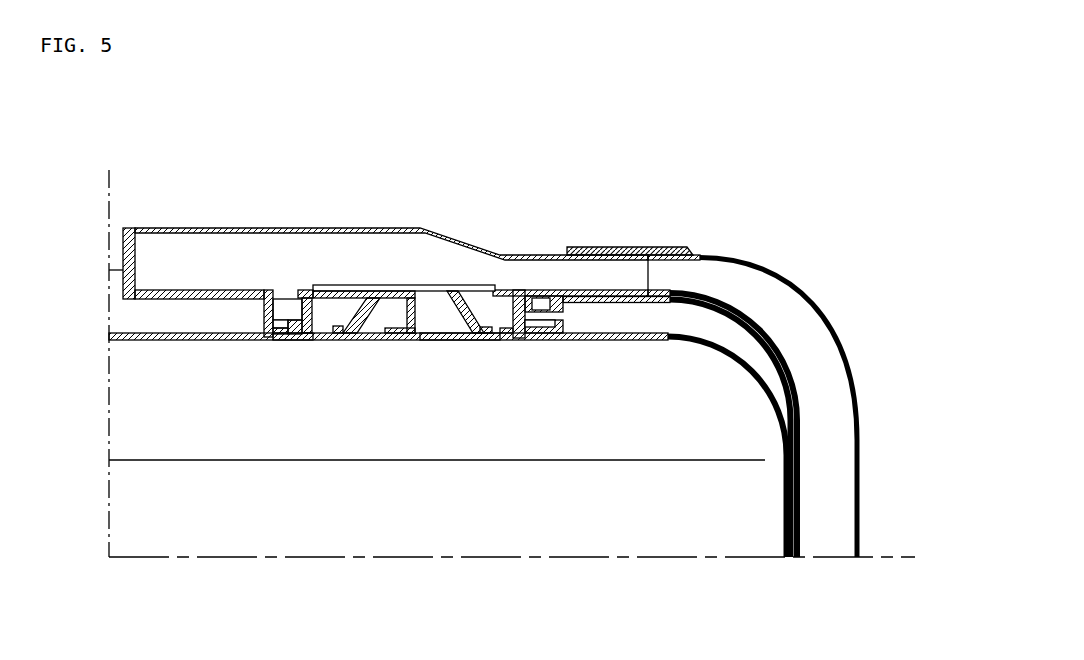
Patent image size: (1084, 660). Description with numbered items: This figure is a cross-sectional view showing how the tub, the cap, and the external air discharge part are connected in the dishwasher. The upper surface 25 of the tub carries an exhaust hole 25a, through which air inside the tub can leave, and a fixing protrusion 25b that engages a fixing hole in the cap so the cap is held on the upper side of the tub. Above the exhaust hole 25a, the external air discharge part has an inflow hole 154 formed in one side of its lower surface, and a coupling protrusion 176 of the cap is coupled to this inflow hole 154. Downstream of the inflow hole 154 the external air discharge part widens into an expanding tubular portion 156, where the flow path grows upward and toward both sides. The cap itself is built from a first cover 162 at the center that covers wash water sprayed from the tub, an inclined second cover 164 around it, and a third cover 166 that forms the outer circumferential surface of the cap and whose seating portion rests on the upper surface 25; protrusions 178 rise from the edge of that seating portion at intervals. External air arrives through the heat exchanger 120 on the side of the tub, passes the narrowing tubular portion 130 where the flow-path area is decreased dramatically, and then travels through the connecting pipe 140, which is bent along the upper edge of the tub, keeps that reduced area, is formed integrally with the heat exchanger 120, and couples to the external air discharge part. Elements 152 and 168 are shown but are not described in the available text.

The upper surface of the tub 25 is at (153, 338).
The exhaust hole 25a is at (453, 334).
The fixing protrusion 25b is at (300, 338).
The heat exchanger 120 is at (862, 469).
The narrowing tubular portion 130 is at (282, 298).
The connecting pipe 140 is at (673, 251).
The reinforcing plate 152 is at (586, 247).
The inflow hole 154 is at (398, 287).
The external air discharge part-expanding tubular portion 156 is at (443, 235).
The first cover 162 is at (409, 334).
The second cover 164 is at (475, 333).
The third cover 166 is at (515, 335).
The mounting bracket 168 is at (548, 334).
The coupling protrusion 176 is at (298, 298).
The protrusions 178 is at (264, 338).